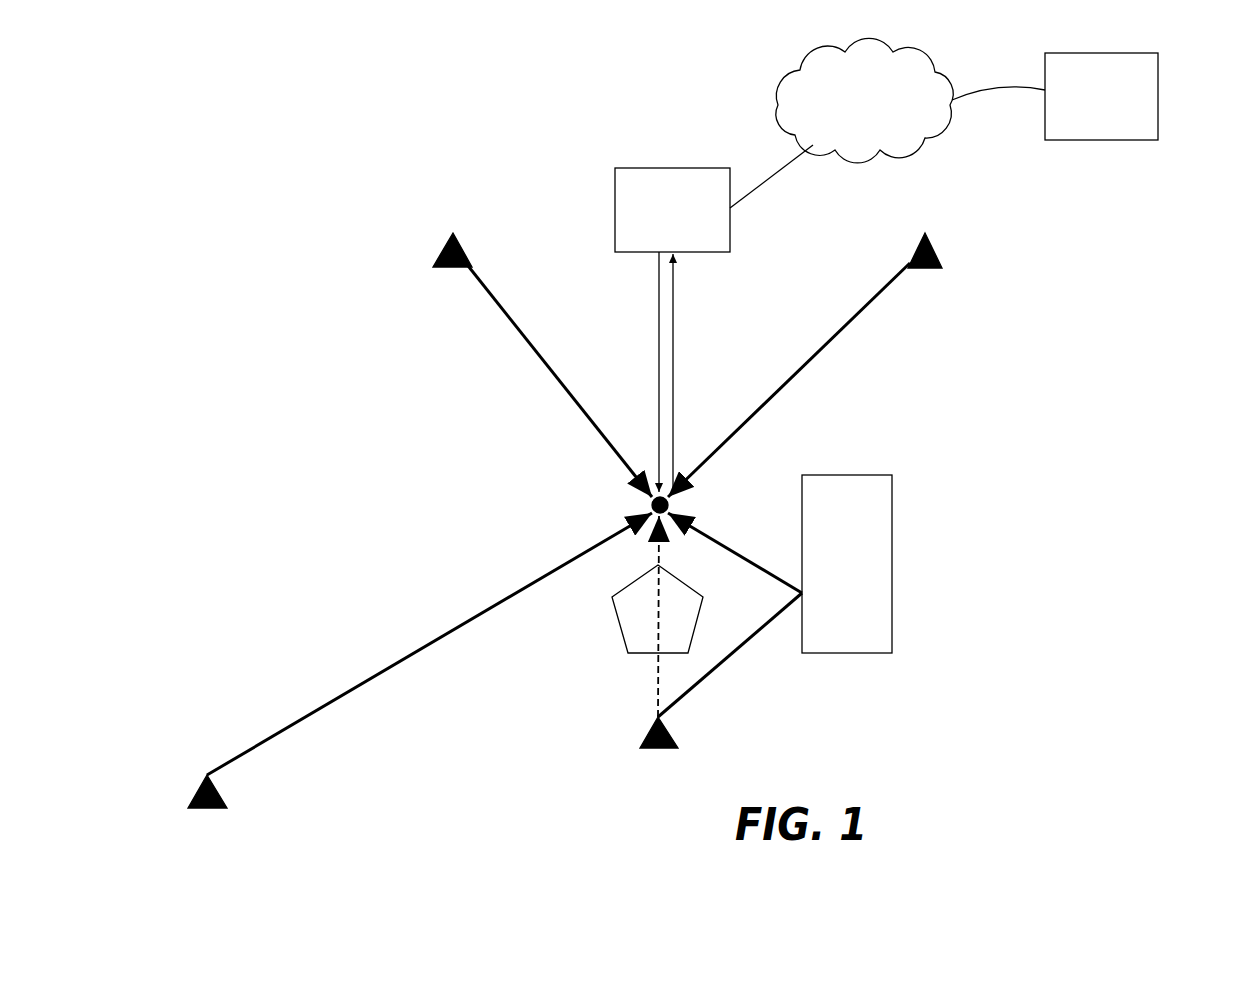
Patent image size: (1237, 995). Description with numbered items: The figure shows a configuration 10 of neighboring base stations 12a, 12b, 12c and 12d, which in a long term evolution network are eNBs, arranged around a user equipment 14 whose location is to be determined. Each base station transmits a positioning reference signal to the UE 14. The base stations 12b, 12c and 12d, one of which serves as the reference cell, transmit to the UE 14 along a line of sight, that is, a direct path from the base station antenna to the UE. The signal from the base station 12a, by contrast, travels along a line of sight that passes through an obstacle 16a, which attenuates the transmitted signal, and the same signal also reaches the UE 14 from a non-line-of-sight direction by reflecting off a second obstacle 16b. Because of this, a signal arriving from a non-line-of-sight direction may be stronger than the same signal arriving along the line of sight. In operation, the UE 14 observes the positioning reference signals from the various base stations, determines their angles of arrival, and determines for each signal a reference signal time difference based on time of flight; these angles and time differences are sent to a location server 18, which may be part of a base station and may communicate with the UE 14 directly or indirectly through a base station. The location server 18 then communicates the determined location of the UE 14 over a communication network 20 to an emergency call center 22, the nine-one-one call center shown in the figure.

The configuration 10 is at (530, 152).
The base station 12a is at (670, 738).
The base station 12b is at (915, 268).
The base station 12c is at (452, 268).
The base station 12d is at (207, 810).
The user equipment 14 is at (678, 470).
The obstacle 16a is at (698, 618).
The obstacle 16b is at (828, 655).
The location server 18 is at (643, 168).
The communication network 20 is at (905, 62).
The 911 call center 22 is at (1158, 86).